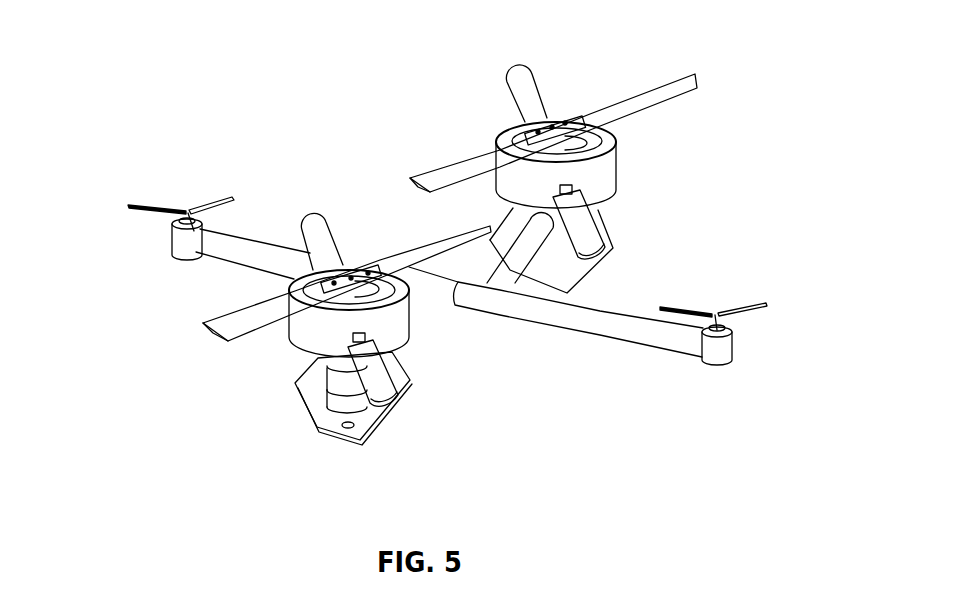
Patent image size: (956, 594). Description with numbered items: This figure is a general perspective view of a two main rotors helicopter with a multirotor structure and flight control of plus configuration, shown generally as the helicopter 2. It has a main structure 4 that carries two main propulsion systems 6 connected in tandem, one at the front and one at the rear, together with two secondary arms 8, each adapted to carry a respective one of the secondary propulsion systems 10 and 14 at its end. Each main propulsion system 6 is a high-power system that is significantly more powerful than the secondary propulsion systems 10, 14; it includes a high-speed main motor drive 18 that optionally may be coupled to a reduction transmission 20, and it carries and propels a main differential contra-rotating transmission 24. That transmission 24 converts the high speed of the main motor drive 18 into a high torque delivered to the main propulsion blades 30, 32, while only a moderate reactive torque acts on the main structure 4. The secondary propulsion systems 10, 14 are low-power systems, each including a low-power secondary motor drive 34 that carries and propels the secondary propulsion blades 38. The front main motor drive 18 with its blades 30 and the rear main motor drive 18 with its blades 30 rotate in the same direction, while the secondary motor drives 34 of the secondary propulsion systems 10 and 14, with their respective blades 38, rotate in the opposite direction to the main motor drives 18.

The helicopter with a multirotor structure and flight control 2 is at (333, 86).
The main structure 4 is at (383, 415).
The main propulsion system 6 is at (208, 425).
The secondary arm 8 is at (237, 252).
The secondary propulsion system 10 is at (720, 347).
The secondary propulsion system 14 is at (177, 240).
The main motor drive 18 is at (345, 397).
The reduction transmission 20 is at (350, 370).
The main differential contra-rotating transmission 24 is at (271, 340).
The main propulsion blades 30 is at (622, 103).
The main propulsion blades 32 is at (527, 98).
The secondary motor drive 34 is at (433, 320).
The secondary propulsion blades 38 is at (138, 207).